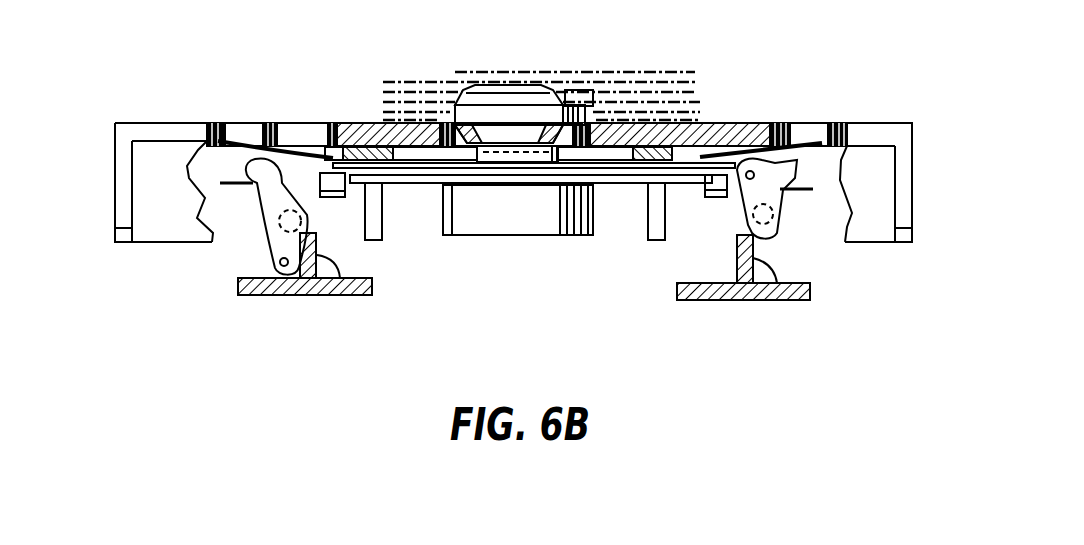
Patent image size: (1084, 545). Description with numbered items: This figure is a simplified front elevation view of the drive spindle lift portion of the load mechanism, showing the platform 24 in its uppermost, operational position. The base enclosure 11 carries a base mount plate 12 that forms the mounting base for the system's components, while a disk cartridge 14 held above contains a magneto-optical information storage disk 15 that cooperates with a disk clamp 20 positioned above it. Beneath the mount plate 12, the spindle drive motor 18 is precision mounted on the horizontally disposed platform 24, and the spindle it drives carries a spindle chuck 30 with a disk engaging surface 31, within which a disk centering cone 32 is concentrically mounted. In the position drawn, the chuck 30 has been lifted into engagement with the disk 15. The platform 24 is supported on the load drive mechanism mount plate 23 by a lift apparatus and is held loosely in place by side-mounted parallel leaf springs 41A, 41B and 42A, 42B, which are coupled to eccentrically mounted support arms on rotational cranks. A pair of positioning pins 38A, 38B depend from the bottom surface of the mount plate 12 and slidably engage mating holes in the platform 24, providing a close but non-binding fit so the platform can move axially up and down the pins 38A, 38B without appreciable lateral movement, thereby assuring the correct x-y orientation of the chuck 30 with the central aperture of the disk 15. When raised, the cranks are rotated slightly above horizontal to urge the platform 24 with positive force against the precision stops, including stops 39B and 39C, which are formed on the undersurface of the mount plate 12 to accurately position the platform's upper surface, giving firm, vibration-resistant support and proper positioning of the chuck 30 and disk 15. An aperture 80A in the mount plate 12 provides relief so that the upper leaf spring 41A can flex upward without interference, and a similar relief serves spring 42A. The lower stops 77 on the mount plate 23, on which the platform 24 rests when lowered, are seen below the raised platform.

The base enclosure 11 is at (928, 205).
The base mount plate 12 is at (748, 123).
The disk cartridge 14 is at (687, 75).
The magneto-optical information storage disk 15 is at (643, 90).
The spindle drive motor 18 is at (510, 236).
The disk clamp 20 is at (476, 68).
The load drive mechanism mount plate 23 is at (263, 296).
The platform 24 is at (420, 169).
The spindle chuck 30 is at (592, 110).
The disk engaging surface 31 is at (460, 100).
The disk centering cone 32 is at (575, 87).
The positioning pin 38A is at (383, 222).
The positioning pin 38B is at (648, 222).
The precision stop 39B is at (720, 123).
The precision stop 39C is at (363, 123).
The leaf spring 41A is at (222, 152).
The leaf spring 41B is at (243, 192).
The leaf spring 42A is at (803, 150).
The leaf spring 42B is at (797, 188).
The lower stops 77 is at (330, 296).
The aperture 80A is at (225, 123).